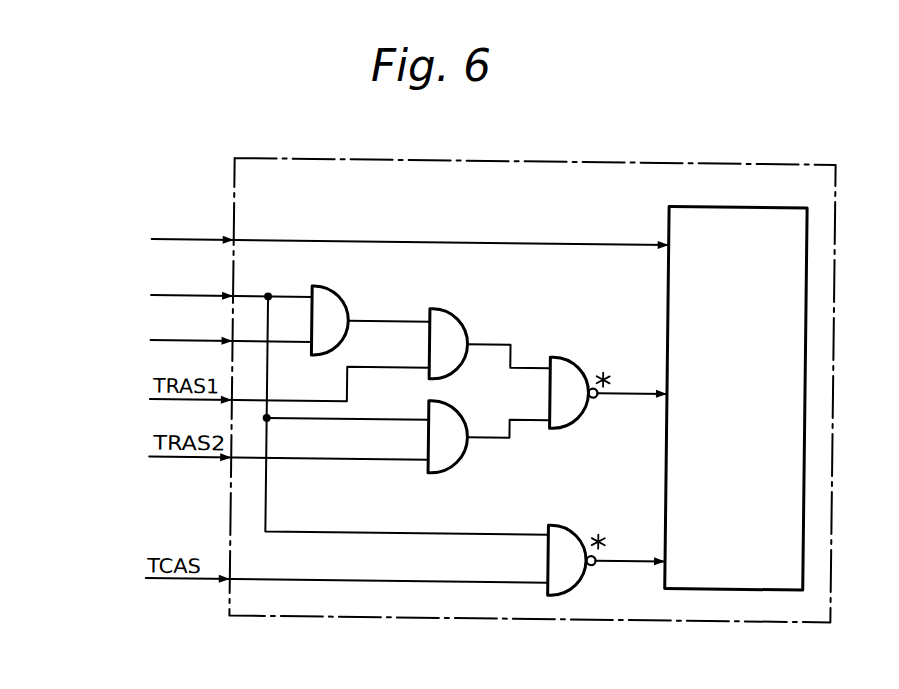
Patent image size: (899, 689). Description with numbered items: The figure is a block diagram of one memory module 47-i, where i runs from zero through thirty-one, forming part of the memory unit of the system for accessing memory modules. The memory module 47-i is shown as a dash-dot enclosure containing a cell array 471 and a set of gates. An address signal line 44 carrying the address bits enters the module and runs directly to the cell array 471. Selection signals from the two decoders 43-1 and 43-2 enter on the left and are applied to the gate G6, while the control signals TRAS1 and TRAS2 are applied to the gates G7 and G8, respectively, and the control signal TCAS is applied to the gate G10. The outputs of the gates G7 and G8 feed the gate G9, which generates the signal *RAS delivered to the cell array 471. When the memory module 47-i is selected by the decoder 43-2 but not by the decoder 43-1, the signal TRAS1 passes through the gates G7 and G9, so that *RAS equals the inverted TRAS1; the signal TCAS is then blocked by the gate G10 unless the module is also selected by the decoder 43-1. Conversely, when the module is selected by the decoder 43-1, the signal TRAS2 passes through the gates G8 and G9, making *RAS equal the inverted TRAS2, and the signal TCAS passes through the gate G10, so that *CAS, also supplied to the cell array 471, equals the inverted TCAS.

The address signal line MA12~MA18 (MA05~MA11) 44 is at (394, 232).
The decoder 43-1 is at (204, 294).
The decoder 43-2 is at (203, 339).
The memory module 47-i is at (716, 160).
The cell array 471 is at (744, 204).
The gate G6 is at (343, 301).
The gate G7 is at (454, 314).
The gate G8 is at (458, 411).
The gate G9 is at (554, 357).
The gate G10 is at (572, 522).